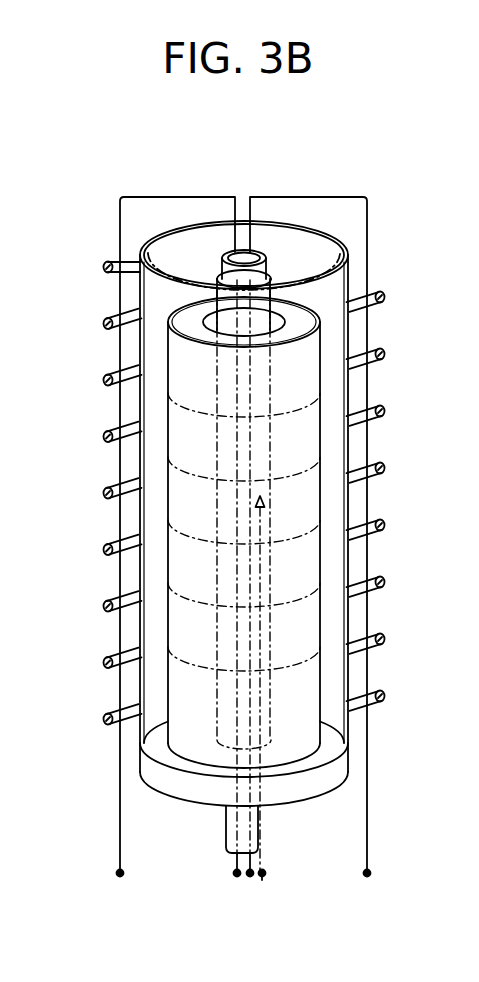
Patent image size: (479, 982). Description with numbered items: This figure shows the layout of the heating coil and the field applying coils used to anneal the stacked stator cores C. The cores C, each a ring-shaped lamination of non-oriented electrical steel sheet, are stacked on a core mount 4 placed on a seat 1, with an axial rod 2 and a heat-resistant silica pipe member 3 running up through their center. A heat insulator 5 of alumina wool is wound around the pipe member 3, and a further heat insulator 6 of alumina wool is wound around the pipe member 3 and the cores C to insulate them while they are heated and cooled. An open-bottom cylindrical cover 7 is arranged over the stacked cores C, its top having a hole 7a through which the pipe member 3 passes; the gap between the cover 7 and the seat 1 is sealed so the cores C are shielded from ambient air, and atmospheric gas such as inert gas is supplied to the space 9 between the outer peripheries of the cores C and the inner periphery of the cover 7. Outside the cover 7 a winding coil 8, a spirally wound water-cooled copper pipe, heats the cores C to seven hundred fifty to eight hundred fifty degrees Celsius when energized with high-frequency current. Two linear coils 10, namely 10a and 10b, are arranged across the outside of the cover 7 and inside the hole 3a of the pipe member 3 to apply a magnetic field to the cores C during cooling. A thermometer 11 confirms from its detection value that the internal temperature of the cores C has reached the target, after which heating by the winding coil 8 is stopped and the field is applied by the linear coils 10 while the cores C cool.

The seat 1 is at (340, 762).
The axial rod 2 is at (227, 838).
The pipe member 3 is at (270, 278).
The hole of the pipe member 3a is at (255, 253).
The core mount 4 is at (305, 703).
The heat insulator 5 is at (262, 322).
The heat insulator 6 is at (310, 553).
The cover 7 is at (343, 240).
The hole 7a is at (222, 262).
The winding coil 8 is at (380, 296).
The space 9 is at (153, 450).
The linear coils 10 is at (218, 143).
The linear coil 10a is at (177, 196).
The linear coil 10b is at (267, 196).
The thermometer 11 is at (265, 503).
The stator cores C is at (160, 350).